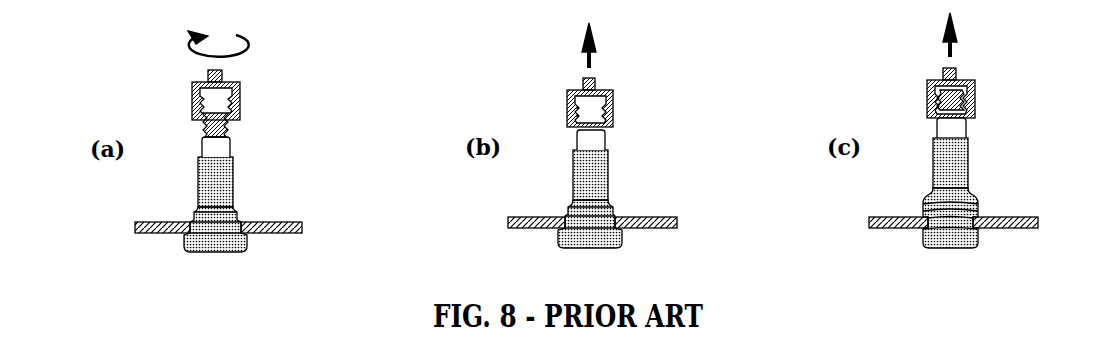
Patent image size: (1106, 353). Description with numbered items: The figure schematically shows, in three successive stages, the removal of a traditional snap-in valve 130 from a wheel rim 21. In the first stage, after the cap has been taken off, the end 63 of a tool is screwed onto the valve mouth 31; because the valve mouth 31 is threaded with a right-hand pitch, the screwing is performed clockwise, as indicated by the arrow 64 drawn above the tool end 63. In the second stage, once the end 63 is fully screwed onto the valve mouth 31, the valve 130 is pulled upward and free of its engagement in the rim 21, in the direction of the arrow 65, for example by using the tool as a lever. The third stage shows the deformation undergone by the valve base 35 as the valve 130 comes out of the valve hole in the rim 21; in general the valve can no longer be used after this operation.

The snap-in valve 130 is at (178, 155).
The rim 21 is at (280, 223).
The valve mouth 31 is at (228, 124).
The valve base 35 is at (977, 211).
The end of the tool 63 is at (240, 87).
The arrow 64 is at (240, 33).
The arrow 65 is at (593, 56).